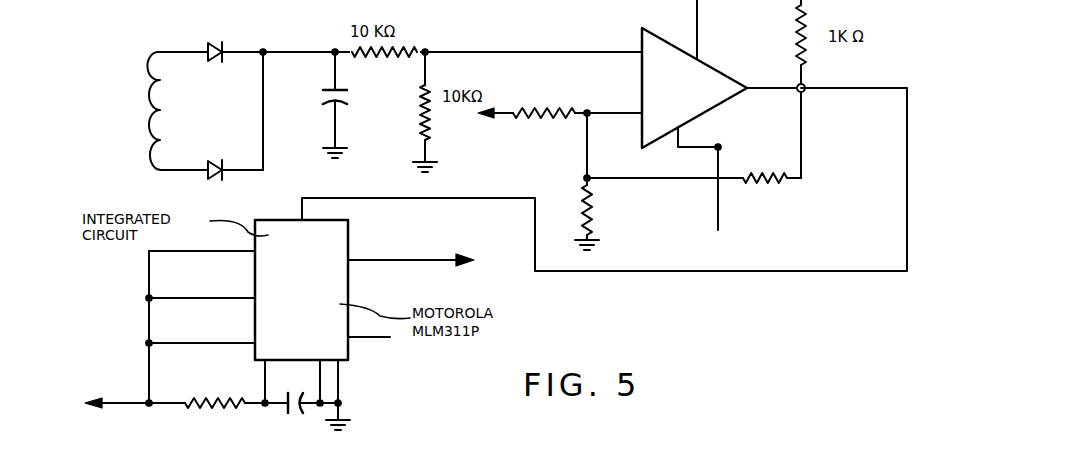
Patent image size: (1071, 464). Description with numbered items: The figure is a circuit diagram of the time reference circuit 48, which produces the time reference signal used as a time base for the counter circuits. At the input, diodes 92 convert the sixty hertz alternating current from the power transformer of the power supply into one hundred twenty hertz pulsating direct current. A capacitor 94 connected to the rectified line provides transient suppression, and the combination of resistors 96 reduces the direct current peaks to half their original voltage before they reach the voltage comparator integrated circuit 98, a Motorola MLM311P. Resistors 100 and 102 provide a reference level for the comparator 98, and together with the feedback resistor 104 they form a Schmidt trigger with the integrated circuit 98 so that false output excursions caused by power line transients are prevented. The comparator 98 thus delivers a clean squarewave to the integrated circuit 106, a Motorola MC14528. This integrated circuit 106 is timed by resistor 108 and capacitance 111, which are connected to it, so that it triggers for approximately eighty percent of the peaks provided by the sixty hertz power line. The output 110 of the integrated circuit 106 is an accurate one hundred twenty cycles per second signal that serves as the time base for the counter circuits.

The time reference circuit 48 is at (611, 290).
The diodes 92 is at (218, 58).
The capacitor 94 is at (330, 104).
The resistors 96 is at (421, 113).
The voltage comparator integrated circuit 98 is at (694, 101).
The resistor 100 is at (532, 110).
The resistor 102 is at (591, 197).
The feedback resistor 104 is at (763, 184).
The integrated circuit 106 is at (320, 314).
The resistor 108 is at (200, 411).
The output 110 is at (392, 262).
The capacitance 111 is at (301, 402).